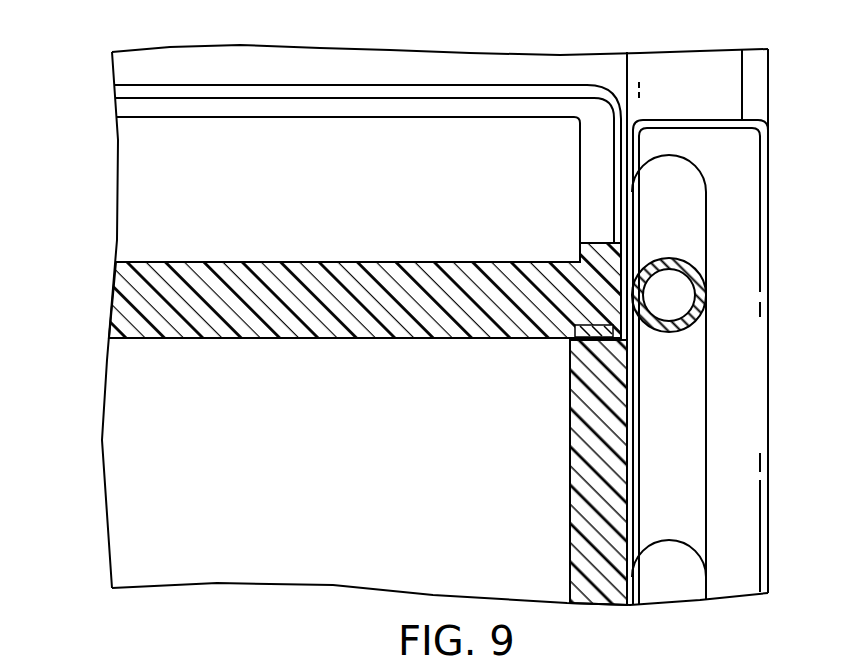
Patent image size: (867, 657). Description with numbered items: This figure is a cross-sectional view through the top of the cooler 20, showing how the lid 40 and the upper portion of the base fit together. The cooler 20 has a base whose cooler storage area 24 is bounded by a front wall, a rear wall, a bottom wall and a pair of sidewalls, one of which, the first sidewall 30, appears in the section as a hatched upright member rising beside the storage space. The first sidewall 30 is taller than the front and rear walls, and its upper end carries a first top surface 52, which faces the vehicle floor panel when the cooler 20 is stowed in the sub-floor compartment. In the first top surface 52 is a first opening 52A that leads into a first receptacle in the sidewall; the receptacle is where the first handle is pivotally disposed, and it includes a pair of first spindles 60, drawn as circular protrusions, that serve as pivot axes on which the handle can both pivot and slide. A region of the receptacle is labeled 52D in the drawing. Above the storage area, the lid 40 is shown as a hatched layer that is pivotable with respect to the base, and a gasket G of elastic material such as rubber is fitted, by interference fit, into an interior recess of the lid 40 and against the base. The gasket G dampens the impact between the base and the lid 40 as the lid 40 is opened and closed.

The cooler 20 is at (68, 102).
The cooler storage area 24 is at (172, 457).
The first sidewall 30 is at (600, 437).
The lid 40 is at (410, 300).
The gasket G is at (598, 338).
The first top surface 52 is at (715, 78).
The first opening 52A is at (722, 140).
The housing pocket 52D is at (672, 128).
The first spindle 60 is at (675, 330).